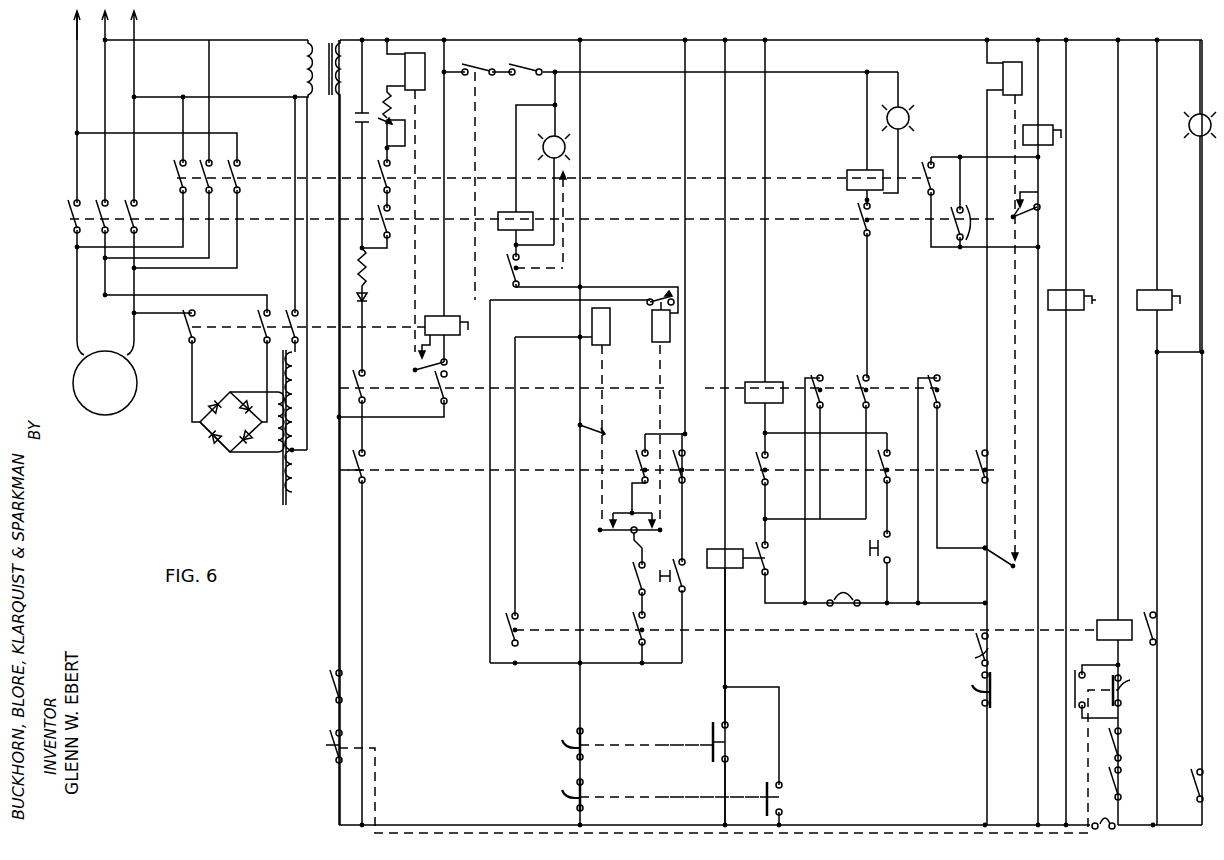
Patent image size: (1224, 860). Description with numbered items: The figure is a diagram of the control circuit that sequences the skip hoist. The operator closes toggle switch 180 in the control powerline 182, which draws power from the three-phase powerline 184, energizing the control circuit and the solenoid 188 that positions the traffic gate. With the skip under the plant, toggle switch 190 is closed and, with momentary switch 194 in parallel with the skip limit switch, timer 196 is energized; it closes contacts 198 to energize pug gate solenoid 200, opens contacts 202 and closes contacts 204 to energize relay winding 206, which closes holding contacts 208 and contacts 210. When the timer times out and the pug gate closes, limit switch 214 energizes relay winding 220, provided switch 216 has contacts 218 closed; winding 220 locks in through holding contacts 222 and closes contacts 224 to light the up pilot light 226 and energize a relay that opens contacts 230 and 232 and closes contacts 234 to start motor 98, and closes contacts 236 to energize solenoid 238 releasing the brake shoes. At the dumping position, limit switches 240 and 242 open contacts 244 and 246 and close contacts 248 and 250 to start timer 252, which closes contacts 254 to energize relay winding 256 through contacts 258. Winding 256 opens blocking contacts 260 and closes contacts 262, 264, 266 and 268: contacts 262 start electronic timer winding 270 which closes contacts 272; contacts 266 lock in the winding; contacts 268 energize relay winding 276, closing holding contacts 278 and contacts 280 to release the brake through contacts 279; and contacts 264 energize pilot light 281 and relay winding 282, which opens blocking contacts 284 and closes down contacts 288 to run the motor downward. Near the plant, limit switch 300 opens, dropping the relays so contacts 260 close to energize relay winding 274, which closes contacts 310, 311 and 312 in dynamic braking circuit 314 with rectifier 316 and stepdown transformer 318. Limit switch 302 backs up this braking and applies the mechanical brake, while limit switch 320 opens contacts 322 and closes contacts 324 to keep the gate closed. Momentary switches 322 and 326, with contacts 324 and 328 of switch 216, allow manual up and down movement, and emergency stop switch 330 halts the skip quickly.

The motor 98 is at (137, 371).
The toggle switch 180 is at (333, 684).
The control powerline 182 is at (339, 545).
The three-phase powerline 184 is at (70, 78).
The solenoid 188 is at (1072, 310).
The toggle switch 190 is at (1110, 786).
The momentary switch 194 is at (1128, 690).
The timer 196 is at (1097, 620).
The contacts 198 is at (1158, 614).
The pug gate solenoid 200 is at (1170, 310).
The contacts 202 is at (640, 642).
The contacts 204 is at (520, 645).
The relay winding 206 is at (603, 330).
The holding contacts 208 is at (595, 424).
The contacts 210 is at (618, 533).
The limit switch 214 is at (632, 576).
The manually operable switch 216 is at (374, 485).
The contacts 218 is at (645, 454).
The relay winding 220 is at (656, 342).
The holding contacts 222 is at (654, 533).
The contacts 224 is at (652, 303).
The up pilot light 226 is at (548, 136).
The contacts 230 is at (393, 240).
The contacts 232 is at (872, 236).
The contacts 234 is at (130, 232).
The contacts 236 is at (965, 235).
The solenoid 238 is at (1053, 126).
The limit switch 240 is at (558, 745).
The limit switch 242 is at (558, 795).
The contacts 244 is at (583, 740).
The contacts 246 is at (583, 793).
The contacts 248 is at (728, 740).
The contacts 250 is at (768, 790).
The timer 252 is at (712, 570).
The contacts 254 is at (768, 570).
The relay winding 256 is at (785, 375).
The contacts 258 is at (762, 458).
The blocking contacts 260 is at (446, 399).
The contacts 262 is at (364, 398).
The contacts 264 is at (872, 386).
The contacts 266 is at (826, 386).
The contacts 268 is at (942, 386).
The electronic timer winding 270 is at (405, 70).
The contacts 272 is at (440, 362).
The relay winding 274 is at (462, 326).
The relay winding 276 is at (1003, 78).
The holding contacts 278 is at (514, 212).
The contacts 279 is at (980, 455).
The contacts 280 is at (1040, 215).
The pilot light 281 is at (906, 102).
The relay winding 282 is at (852, 170).
The blocking contacts 284 is at (514, 268).
The down contacts 288 is at (235, 183).
The limit switch 300 is at (848, 603).
The limit switch 302 is at (975, 644).
The contacts 310 is at (185, 338).
The contacts 311 is at (260, 338).
The contacts 312 is at (288, 312).
The dynamic braking circuit 314 is at (220, 448).
The rectifier 316 is at (250, 400).
The stepdown transformer 318 is at (280, 450).
The limit switch 320 is at (966, 689).
The contacts / momentary switch 322 is at (664, 590).
The contacts 324 is at (686, 455).
The momentary switch 326 is at (870, 545).
The contacts 328 is at (892, 452).
The emergency stop switch 330 is at (333, 742).